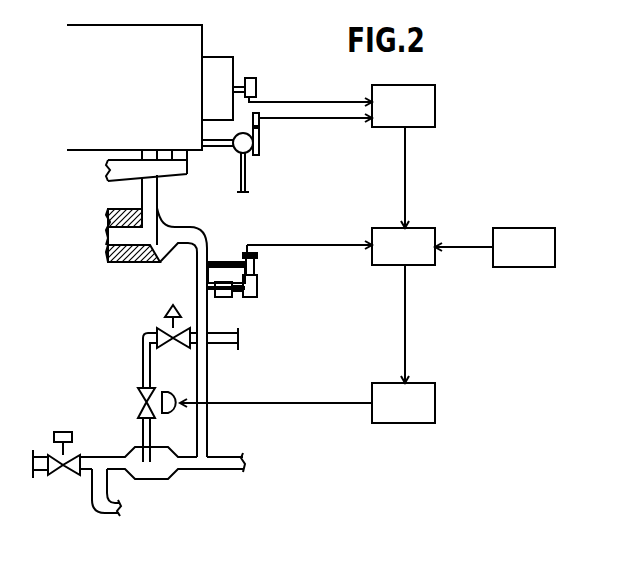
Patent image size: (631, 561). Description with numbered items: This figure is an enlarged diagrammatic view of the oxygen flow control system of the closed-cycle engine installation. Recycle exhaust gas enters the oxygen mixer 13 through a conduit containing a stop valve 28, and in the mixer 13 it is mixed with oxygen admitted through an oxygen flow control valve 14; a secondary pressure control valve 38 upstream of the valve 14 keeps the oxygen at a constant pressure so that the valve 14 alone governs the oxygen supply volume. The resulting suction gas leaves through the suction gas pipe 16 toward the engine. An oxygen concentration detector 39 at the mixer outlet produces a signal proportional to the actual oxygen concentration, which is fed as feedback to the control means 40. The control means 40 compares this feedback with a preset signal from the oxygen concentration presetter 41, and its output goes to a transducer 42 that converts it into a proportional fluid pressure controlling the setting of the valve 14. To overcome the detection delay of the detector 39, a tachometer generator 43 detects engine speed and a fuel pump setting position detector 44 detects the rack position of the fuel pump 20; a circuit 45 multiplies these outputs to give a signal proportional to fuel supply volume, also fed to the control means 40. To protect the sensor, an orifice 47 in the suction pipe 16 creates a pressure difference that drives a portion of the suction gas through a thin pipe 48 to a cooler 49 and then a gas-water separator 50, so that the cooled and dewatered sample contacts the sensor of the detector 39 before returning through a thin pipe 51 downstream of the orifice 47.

The oxygen mixer 13 is at (152, 480).
The oxygen flow control valve 14 is at (146, 402).
The suction gas pipe 16 is at (208, 377).
The fuel pump 20 is at (257, 157).
The stop valve 28 is at (63, 468).
The secondary pressure control valve 38 is at (165, 312).
The oxygen concentration detector 39 is at (247, 245).
The control means 40 is at (403, 246).
The oxygen concentration presetter 41 is at (524, 247).
The transducer 42 is at (403, 403).
The tachometer generator 43 is at (250, 78).
The fuel pump setting position detector 44 is at (260, 125).
The multiplying circuit 45 is at (403, 106).
The orifice 47 is at (206, 277).
The thin pipe 48 is at (218, 297).
The cooler 49 is at (228, 297).
The gas-water separator 50 is at (257, 290).
The thin pipe 51 is at (230, 258).